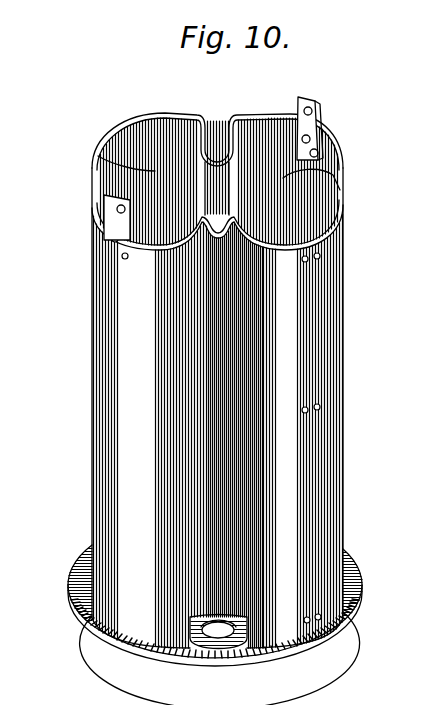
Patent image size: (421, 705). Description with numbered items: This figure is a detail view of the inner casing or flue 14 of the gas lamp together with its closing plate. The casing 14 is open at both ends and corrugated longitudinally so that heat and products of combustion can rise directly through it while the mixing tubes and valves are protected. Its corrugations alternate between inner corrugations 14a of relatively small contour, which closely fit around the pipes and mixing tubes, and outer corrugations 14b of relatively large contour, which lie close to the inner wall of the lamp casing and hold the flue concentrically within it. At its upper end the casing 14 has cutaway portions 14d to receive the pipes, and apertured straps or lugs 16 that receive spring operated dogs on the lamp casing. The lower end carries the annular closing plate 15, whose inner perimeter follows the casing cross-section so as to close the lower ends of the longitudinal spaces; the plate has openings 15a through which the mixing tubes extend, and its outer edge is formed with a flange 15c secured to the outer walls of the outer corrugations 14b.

The casing or flue 14 is at (92, 238).
The inner corrugations 14a is at (148, 168).
The outer corrugations 14b is at (367, 214).
The cutaway portions 14d is at (217, 152).
The annular closing plate 15 is at (346, 624).
The openings 15a is at (216, 636).
The flange 15c is at (72, 557).
The apertured straps or lugs 16 is at (326, 116).